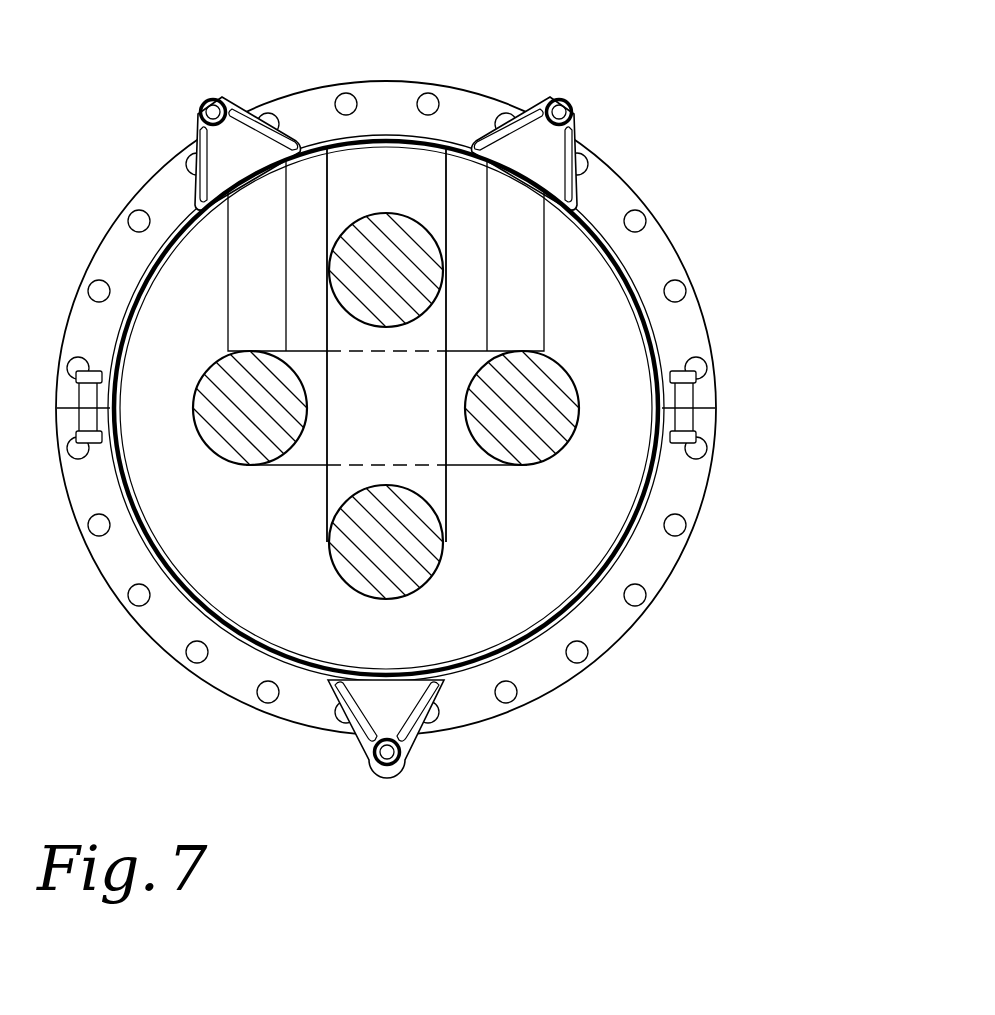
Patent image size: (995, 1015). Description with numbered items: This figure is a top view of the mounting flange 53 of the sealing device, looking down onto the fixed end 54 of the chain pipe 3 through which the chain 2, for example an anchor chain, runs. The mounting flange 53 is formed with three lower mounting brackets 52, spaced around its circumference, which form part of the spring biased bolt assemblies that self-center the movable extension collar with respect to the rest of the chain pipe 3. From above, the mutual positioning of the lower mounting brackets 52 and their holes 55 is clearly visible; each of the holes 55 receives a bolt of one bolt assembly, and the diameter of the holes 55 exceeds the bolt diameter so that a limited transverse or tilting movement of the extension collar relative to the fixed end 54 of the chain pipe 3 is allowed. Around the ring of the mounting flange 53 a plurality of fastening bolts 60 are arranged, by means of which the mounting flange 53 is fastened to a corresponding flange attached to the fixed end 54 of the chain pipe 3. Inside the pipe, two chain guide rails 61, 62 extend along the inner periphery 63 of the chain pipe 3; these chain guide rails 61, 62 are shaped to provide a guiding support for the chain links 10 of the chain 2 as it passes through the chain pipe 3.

The chain 2 is at (445, 532).
The chain pipe 3 is at (137, 512).
The chain links 10 is at (348, 563).
The lower mounting bracket 52 is at (530, 147).
The mounting flange 53 is at (658, 213).
The fixed end 54 is at (766, 298).
The holes 55 is at (211, 110).
The fastening bolts 60 is at (683, 530).
The chain guide rail 61 is at (243, 283).
The chain guide rail 62 is at (518, 300).
The inner periphery 63 is at (128, 333).